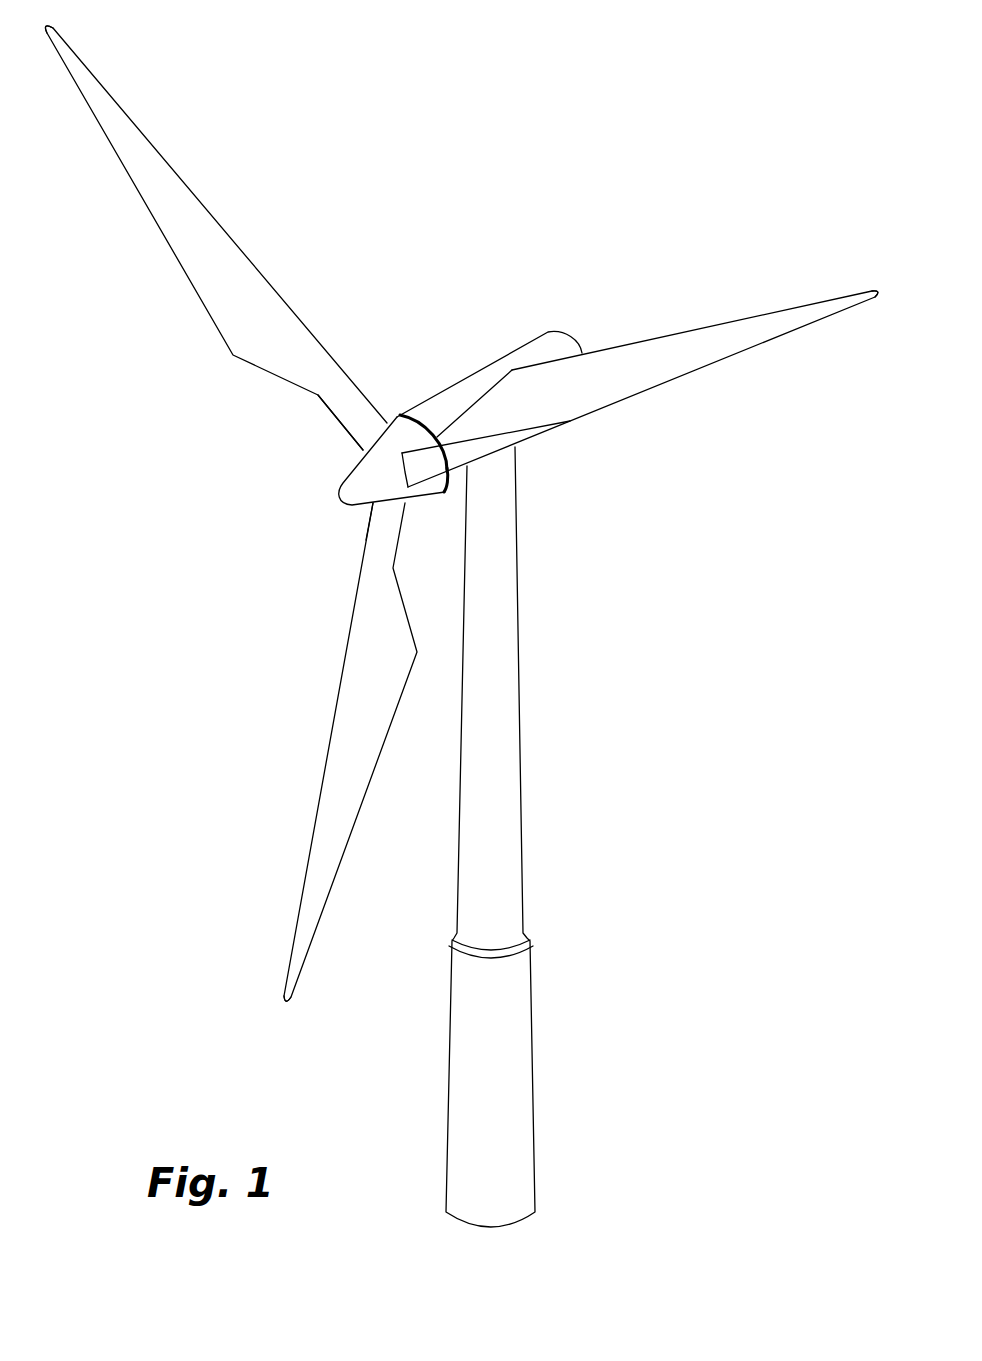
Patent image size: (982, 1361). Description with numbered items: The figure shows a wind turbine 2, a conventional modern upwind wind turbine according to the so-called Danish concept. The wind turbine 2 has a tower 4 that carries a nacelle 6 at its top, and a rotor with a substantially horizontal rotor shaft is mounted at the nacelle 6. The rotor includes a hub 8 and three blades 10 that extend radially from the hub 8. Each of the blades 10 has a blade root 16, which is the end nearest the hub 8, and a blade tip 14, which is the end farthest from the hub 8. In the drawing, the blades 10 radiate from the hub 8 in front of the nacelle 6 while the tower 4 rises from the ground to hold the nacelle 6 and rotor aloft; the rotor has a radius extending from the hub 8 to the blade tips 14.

The wind turbine 2 is at (618, 775).
The tower 4 is at (510, 697).
The nacelle 6 is at (457, 395).
The hub 8 is at (360, 480).
The blades 10 is at (248, 328).
The blade tip 14 is at (95, 82).
The blade root 16 is at (363, 442).